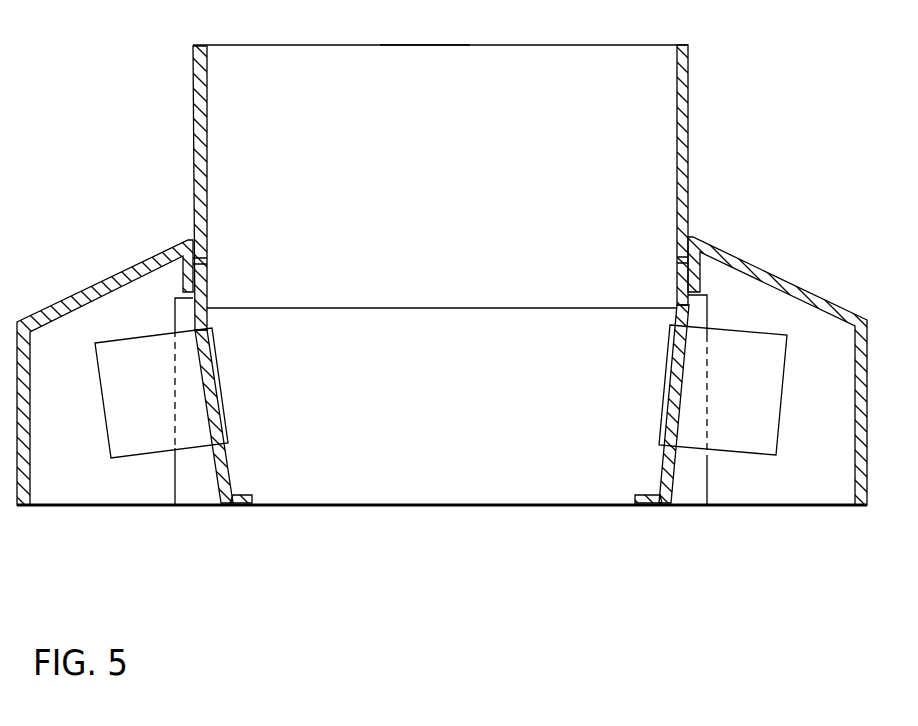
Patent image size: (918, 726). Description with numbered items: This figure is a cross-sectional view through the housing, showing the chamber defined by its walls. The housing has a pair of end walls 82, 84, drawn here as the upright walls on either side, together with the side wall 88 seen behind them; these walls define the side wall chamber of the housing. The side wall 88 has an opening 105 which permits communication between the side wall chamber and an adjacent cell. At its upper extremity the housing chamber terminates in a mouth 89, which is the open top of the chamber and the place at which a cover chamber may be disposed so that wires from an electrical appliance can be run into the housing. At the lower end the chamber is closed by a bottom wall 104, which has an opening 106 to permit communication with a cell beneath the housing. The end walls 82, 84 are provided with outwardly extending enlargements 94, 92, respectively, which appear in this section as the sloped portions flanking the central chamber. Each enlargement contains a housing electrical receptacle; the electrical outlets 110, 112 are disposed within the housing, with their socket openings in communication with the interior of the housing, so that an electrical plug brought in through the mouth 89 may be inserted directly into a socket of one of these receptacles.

The end wall 82 is at (689, 117).
The end wall 84 is at (195, 131).
The side wall 88 is at (537, 63).
The mouth 89 is at (410, 44).
The enlargement 92 is at (98, 283).
The enlargement 94 is at (763, 270).
The bottom wall 104 is at (235, 497).
The opening 105 is at (453, 405).
The opening 106 is at (265, 498).
The housing electrical receptacle 110 is at (132, 452).
The electrical outlet 112 is at (748, 445).